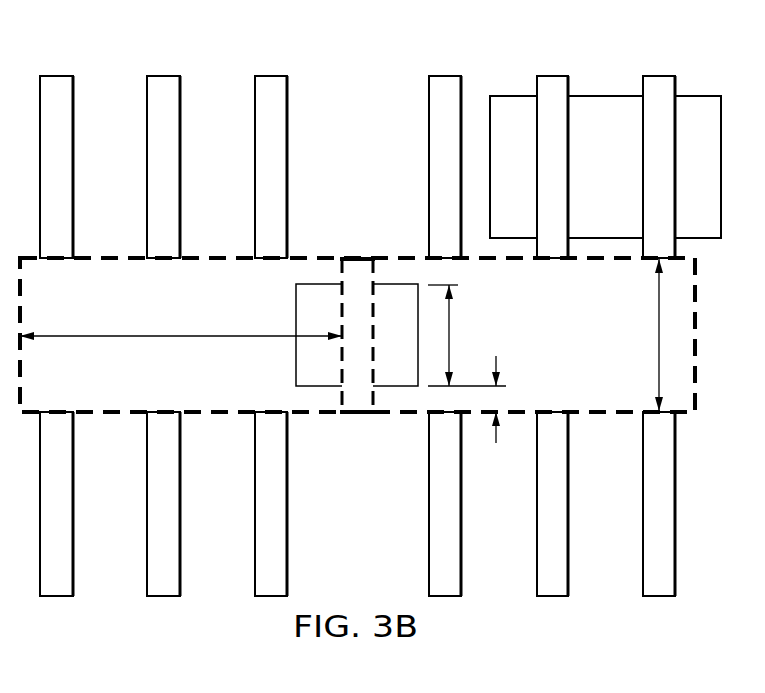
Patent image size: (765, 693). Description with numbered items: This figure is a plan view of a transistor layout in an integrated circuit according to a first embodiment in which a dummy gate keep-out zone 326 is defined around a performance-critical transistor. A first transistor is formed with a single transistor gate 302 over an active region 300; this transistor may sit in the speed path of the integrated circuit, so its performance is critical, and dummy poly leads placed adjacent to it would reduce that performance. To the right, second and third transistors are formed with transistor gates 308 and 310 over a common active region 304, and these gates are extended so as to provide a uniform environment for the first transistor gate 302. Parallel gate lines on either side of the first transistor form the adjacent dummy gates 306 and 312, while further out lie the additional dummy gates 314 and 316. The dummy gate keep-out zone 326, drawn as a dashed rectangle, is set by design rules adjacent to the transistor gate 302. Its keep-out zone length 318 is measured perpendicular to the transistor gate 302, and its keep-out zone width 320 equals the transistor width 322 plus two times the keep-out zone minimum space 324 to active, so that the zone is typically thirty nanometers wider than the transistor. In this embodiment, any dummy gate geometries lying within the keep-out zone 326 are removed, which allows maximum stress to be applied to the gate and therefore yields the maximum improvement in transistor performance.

The active region 300 is at (303, 362).
The transistor gate 302 is at (357, 267).
The common active region 304 is at (605, 103).
The adjacent dummy gate 306 is at (446, 83).
The transistor gate 308 is at (552, 83).
The transistor gate 310 is at (660, 83).
The adjacent dummy gate 312 is at (270, 83).
The additional dummy gate 314 is at (162, 83).
The additional dummy gate 316 is at (55, 83).
The keep-out zone length 318 is at (168, 339).
The keep-out zone width 320 is at (659, 338).
The transistor width 322 is at (450, 326).
The keep-out zone minimum space 324 is at (497, 362).
The dummy gate keep-out zone 326 is at (200, 309).